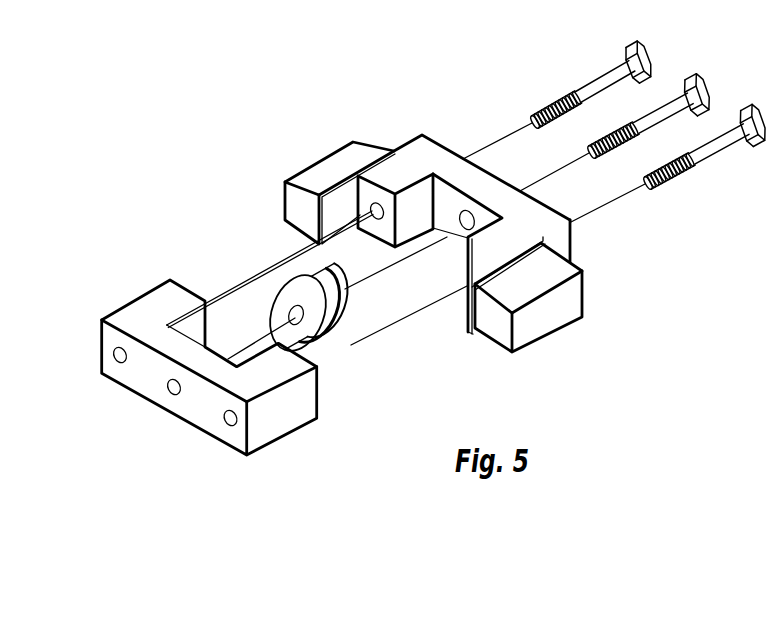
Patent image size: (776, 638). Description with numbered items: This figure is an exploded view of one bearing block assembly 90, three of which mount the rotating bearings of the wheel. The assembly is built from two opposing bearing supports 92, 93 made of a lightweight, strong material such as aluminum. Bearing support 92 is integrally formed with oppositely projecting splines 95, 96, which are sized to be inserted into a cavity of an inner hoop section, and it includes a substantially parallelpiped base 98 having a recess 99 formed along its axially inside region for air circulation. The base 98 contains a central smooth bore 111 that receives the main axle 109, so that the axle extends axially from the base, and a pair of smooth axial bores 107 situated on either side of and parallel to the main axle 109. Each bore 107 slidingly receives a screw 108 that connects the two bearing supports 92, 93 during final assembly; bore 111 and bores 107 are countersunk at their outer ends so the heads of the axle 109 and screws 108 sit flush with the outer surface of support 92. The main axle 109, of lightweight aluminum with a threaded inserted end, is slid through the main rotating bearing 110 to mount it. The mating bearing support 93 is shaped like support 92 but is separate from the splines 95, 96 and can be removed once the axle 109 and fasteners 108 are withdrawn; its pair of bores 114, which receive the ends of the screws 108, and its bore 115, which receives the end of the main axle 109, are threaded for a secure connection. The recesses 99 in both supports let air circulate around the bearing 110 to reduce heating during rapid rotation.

The bearing block assembly 90 is at (417, 244).
The bearing support 92 is at (419, 129).
The bearing support 93 is at (189, 361).
The spline 95 is at (540, 315).
The spline 96 is at (313, 176).
The parallelpiped base 98 is at (582, 244).
The recess 99 is at (433, 248).
The smooth axial bore 107 is at (371, 214).
The screw 108 is at (603, 80).
The main axle 109 is at (672, 98).
The main rotating bearing 110 is at (262, 298).
The central smooth bore 111 is at (461, 209).
The bore 114 is at (117, 364).
The bore 115 is at (173, 396).